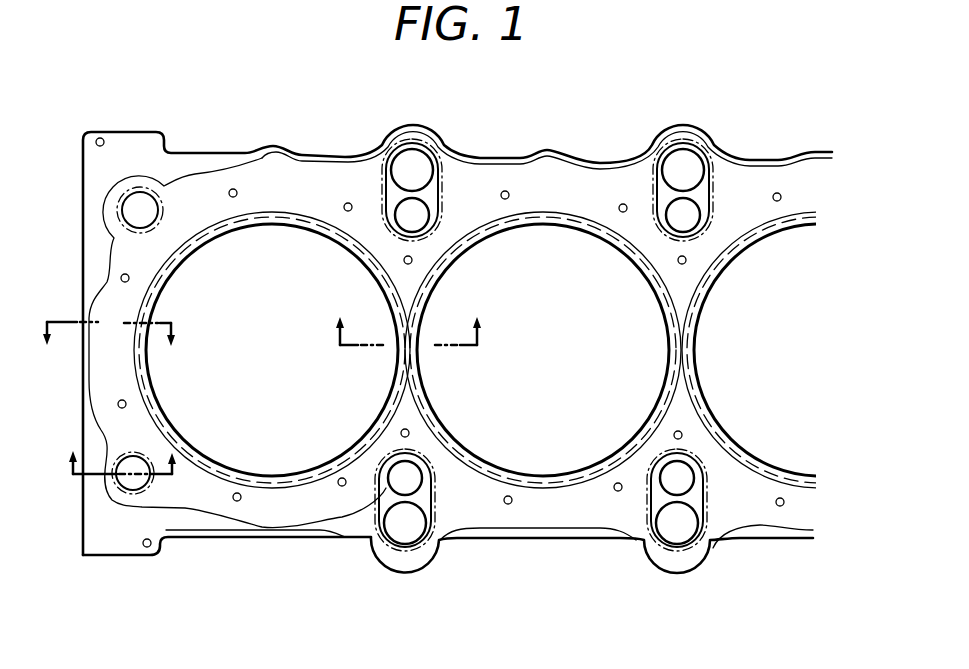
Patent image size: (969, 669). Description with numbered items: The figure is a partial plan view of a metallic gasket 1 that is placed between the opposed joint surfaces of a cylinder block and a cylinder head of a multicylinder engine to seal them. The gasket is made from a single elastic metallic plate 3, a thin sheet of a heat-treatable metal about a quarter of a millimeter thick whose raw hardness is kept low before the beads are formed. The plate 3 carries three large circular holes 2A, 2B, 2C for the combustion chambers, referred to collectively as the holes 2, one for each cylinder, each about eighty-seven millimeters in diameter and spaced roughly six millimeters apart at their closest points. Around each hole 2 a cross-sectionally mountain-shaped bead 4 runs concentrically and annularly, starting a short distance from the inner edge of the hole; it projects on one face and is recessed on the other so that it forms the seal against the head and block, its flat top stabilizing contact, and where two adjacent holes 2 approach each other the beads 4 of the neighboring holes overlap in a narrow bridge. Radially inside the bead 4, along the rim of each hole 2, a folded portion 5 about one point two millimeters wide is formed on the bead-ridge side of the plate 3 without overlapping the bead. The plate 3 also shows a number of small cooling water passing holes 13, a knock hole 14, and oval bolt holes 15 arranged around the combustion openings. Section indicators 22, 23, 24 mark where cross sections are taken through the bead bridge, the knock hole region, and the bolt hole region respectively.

The metallic gasket 1 is at (485, 335).
The holes for combustion chamber 2 is at (479, 415).
The hole for combustion chamber 2A is at (143, 370).
The hole for combustion chamber 2B is at (603, 452).
The hole for combustion chamber 2C is at (733, 428).
The elastic metallic plate 3 is at (537, 160).
The bead 4 is at (266, 211).
The folded portion 5 is at (190, 446).
The cooling water passing holes 13 is at (234, 189).
The knock hole 14 is at (164, 196).
The bolt holes 15 is at (419, 148).
The section line 22- 22 is at (409, 318).
The section line 23- 23 is at (112, 323).
The section line 24- 24 is at (129, 474).